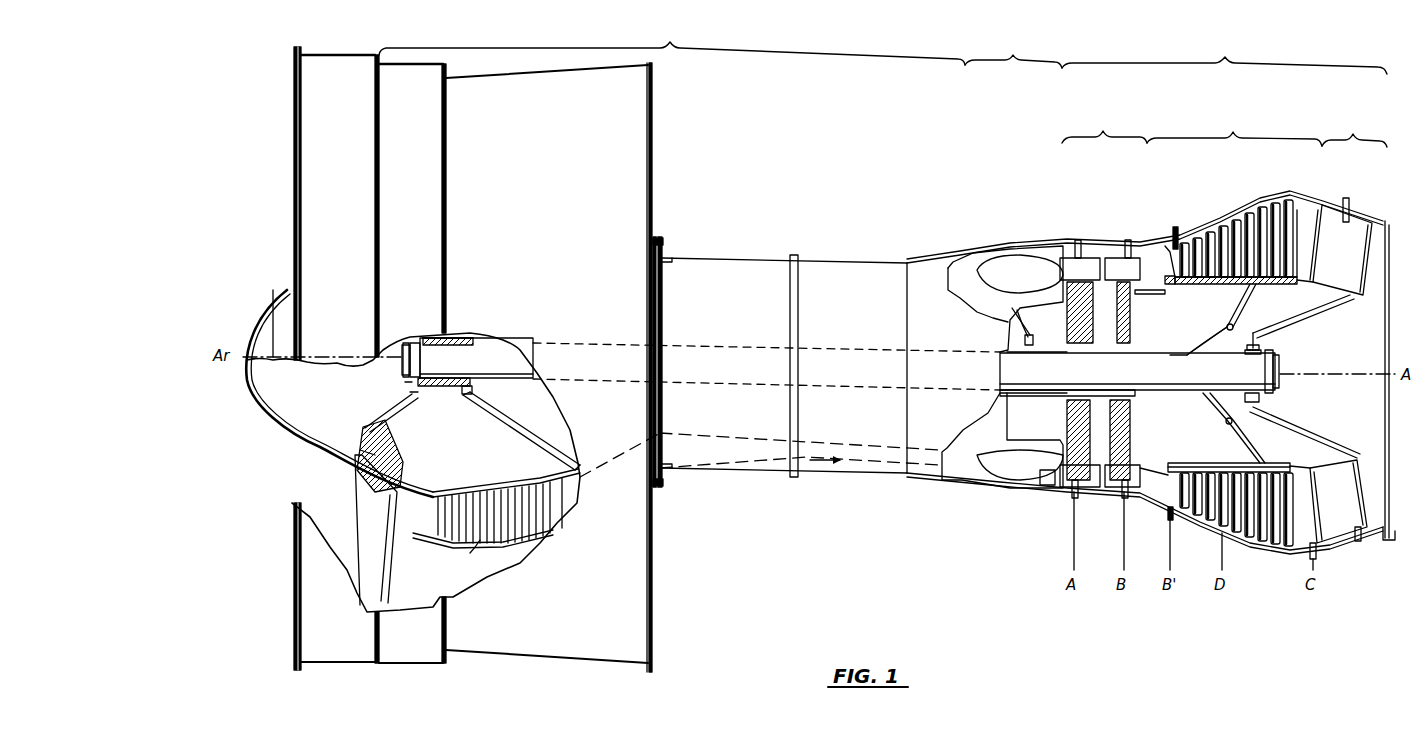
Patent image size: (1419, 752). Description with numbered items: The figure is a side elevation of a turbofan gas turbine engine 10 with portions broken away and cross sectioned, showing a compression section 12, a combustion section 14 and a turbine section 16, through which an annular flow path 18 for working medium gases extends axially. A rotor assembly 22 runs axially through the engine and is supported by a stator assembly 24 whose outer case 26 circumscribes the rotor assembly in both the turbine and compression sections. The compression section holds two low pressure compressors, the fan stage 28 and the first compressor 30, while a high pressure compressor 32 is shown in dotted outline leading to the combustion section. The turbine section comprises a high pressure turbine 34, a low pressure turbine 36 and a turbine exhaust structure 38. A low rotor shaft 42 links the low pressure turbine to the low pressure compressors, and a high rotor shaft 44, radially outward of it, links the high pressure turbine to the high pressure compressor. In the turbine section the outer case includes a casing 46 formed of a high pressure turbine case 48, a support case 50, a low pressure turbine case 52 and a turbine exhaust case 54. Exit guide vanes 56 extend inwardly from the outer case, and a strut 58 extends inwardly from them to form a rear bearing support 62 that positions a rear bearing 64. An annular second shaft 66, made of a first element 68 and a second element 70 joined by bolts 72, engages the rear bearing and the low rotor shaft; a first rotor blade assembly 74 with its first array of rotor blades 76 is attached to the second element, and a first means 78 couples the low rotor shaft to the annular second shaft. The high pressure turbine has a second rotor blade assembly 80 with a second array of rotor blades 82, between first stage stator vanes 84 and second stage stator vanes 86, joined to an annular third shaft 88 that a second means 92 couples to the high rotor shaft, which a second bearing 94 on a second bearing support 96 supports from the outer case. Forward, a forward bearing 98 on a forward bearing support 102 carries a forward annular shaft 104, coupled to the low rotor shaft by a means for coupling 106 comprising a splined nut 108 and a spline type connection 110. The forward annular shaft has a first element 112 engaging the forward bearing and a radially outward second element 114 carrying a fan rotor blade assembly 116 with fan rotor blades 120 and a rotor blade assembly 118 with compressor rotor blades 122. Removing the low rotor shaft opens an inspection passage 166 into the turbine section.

The turbofan gas turbine engine 10 is at (905, 37).
The compression section 12 is at (629, 348).
The combustion section 14 is at (857, 262).
The turbine section 16 is at (1151, 297).
The annular flow path 18 is at (292, 210).
The rotor assembly 22 is at (268, 405).
The stator assembly 24 is at (1005, 245).
The outer case 26 is at (920, 480).
The fan stage 28 is at (405, 448).
The first compressor 30 is at (448, 486).
The high pressure compressor 32 is at (702, 432).
The high pressure turbine 34 is at (1104, 128).
The low pressure turbine 36 is at (1234, 131).
The turbine exhaust structure 38 is at (1354, 133).
The low rotor shaft 42 is at (503, 360).
The high rotor shaft 44 is at (1008, 400).
The casing 46 is at (1080, 258).
The high pressure turbine case 48 is at (1105, 258).
The support case 50 is at (1172, 240).
The low pressure turbine case 52 is at (1242, 207).
The turbine exhaust case 54 is at (1352, 214).
The exit guide vanes 56 is at (1353, 252).
The strut 58 is at (1298, 326).
The rear bearing support 62 is at (1260, 346).
The rear bearing 64 is at (1262, 352).
The annular second shaft 66 is at (1205, 330).
The first element 68 is at (1253, 336).
The second element 70 is at (1255, 300).
The bolts 72 is at (1230, 324).
The first rotor blade assembly 74 is at (1170, 284).
The first array of rotor blades 76 is at (1150, 292).
The first means 78 is at (1262, 398).
The second rotor blade assembly 80 is at (1132, 432).
The second array of rotor blades 82 is at (1072, 490).
The first stage stator vanes 84 is at (1050, 485).
The second stage stator vanes 86 is at (1115, 490).
The annular third shaft 88 is at (1068, 408).
The second means 92 is at (1136, 396).
The second bearing 94 is at (1034, 340).
The second bearing support 96 is at (1032, 324).
The forward bearing 98 is at (475, 392).
The forward bearing support 102 is at (510, 430).
The forward annular shaft 104 is at (410, 395).
The means for coupling 106 is at (405, 384).
The splined nut 108 is at (405, 362).
The spline type connection 110 is at (420, 340).
The first element 112 is at (448, 388).
The second element 114 is at (392, 418).
The fan rotor blade assembly 116 is at (358, 465).
The rotor blade assembly 118 is at (450, 490).
The fan rotor blades 120 is at (376, 530).
The compressor rotor blades 122 is at (475, 542).
The inspection passage 166 is at (1187, 358).